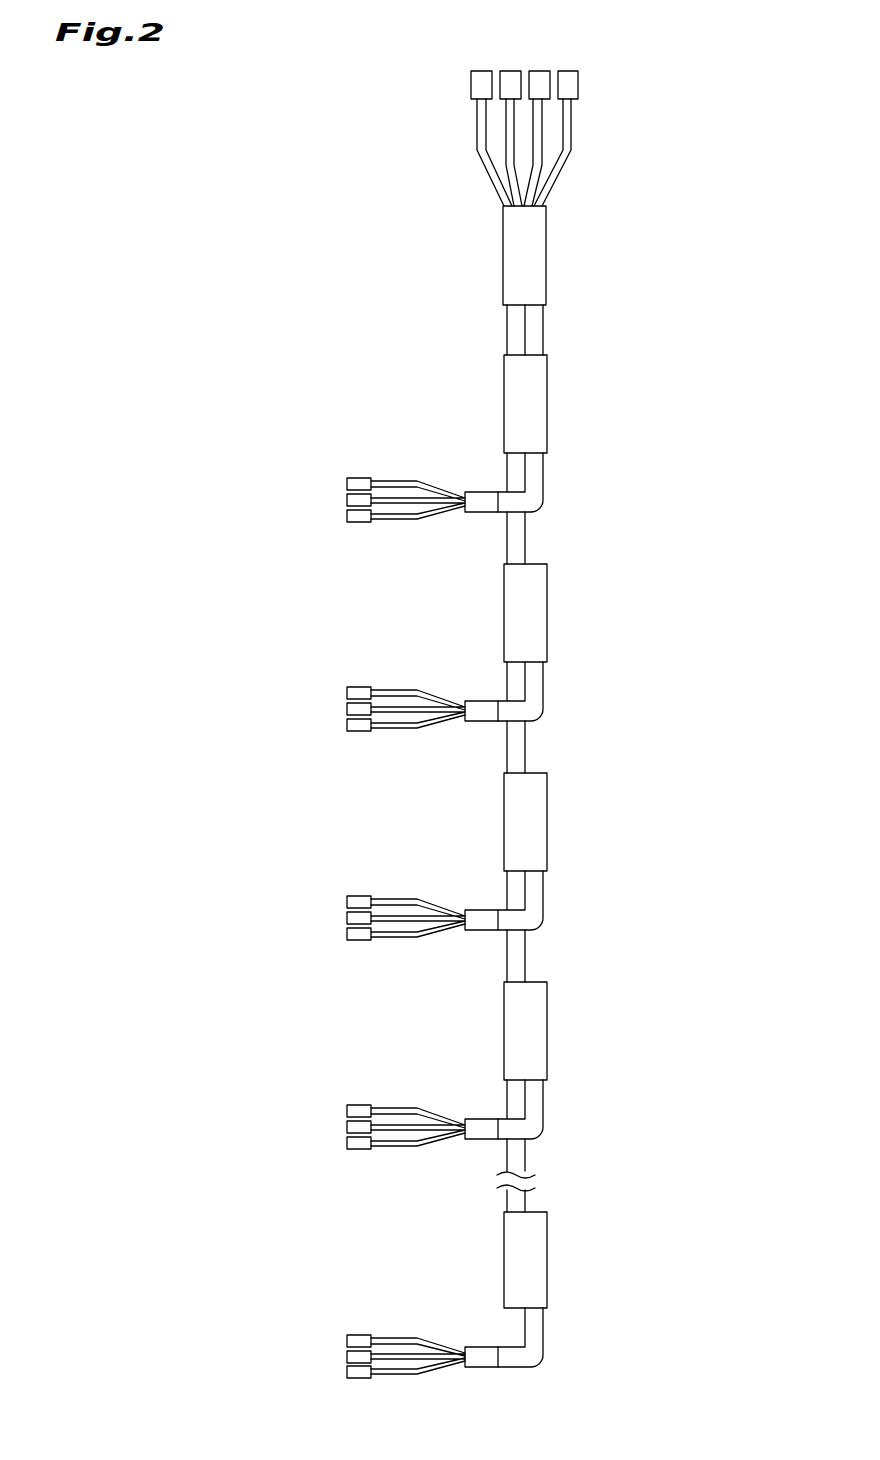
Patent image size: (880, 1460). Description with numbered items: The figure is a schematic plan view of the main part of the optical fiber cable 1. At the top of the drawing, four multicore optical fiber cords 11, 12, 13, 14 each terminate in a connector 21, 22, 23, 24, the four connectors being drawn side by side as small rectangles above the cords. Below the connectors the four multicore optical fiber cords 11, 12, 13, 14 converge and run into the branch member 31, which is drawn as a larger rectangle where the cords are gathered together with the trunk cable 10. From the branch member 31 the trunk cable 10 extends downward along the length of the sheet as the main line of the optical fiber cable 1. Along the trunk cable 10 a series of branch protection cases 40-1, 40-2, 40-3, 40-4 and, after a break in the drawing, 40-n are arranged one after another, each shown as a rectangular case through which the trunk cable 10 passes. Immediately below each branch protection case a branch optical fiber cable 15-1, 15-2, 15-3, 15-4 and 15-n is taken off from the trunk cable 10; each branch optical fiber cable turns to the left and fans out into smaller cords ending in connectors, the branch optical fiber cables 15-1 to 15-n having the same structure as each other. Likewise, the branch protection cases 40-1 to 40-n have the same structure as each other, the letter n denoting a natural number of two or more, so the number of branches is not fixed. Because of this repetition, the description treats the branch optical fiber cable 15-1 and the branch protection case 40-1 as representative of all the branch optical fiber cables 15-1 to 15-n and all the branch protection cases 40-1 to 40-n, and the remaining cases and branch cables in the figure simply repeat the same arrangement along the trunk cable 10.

The optical fiber cable 1 is at (695, 137).
The trunk cable 10 is at (534, 325).
The multicore optical fiber cord 11 is at (568, 115).
The multicore optical fiber cord 12 is at (540, 147).
The multicore optical fiber cord 13 is at (508, 118).
The multicore optical fiber cord 14 is at (483, 148).
The connector 21 is at (568, 80).
The connector 22 is at (538, 80).
The connector 23 is at (508, 80).
The connector 24 is at (480, 80).
The branch member 31 is at (535, 252).
The branch protection case 40-1 is at (556, 403).
The branch protection case 40-2 is at (556, 612).
The branch protection case 40-3 is at (556, 821).
The branch protection case 40-4 is at (556, 1030).
The branch protection case 40-n is at (556, 1258).
The branch optical fiber cable 15-1 is at (468, 484).
The branch optical fiber cable 15-2 is at (468, 693).
The branch optical fiber cable 15-3 is at (468, 902).
The branch optical fiber cable 15-4 is at (468, 1111).
The branch optical fiber cable 15-n is at (468, 1341).